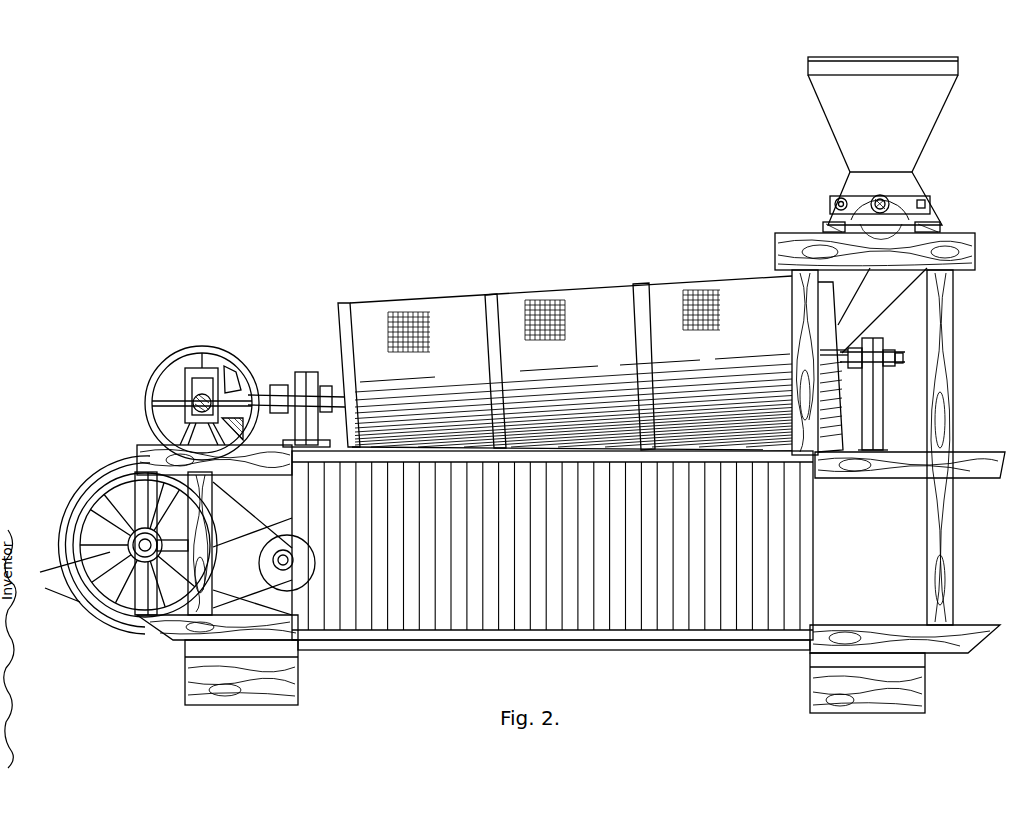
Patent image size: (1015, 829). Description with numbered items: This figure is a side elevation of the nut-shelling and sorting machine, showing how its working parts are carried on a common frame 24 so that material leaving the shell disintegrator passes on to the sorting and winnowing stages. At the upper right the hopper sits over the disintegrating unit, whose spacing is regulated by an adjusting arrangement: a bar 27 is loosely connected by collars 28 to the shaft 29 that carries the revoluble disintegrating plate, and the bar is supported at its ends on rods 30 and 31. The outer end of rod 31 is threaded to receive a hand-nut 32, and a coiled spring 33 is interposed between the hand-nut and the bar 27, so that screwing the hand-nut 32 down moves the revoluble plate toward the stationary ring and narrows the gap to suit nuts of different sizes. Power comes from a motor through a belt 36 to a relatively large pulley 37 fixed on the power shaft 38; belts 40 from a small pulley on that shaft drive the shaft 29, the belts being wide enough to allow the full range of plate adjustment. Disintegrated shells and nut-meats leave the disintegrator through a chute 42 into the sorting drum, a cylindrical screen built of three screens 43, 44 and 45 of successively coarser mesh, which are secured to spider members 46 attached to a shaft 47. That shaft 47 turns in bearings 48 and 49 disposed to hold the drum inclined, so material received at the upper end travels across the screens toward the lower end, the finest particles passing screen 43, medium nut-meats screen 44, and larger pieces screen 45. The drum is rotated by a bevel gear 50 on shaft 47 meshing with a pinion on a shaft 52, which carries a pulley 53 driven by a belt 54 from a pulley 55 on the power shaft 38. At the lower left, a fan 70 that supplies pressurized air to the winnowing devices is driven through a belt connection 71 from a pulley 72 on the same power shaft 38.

The frame 24 is at (137, 447).
The bar 27 is at (872, 200).
The collars 28 is at (880, 205).
The shaft 29 is at (888, 200).
The rod 30 is at (925, 205).
The rod 31 is at (836, 208).
The hand-nut 32 is at (841, 204).
The coiled spring 33 is at (845, 103).
The belt 36 is at (63, 502).
The pulley 37 is at (90, 548).
The power shaft 38 is at (97, 518).
The belts 40 is at (693, 275).
The chute 42 is at (860, 308).
The screen 43 is at (664, 305).
The screen 44 is at (577, 305).
The screen 45 is at (410, 312).
The spider members 46 is at (347, 305).
The shaft 47 is at (278, 394).
The bearing 48 is at (301, 372).
The bearing 49 is at (868, 357).
The bevel gear 50 is at (232, 382).
The shaft 52 is at (205, 392).
The pulley 53 is at (202, 358).
The belt 54 is at (143, 418).
The pulley 55 is at (130, 556).
The fan 70 is at (275, 530).
The belt connection 71 is at (228, 505).
The pulley 72 is at (135, 628).